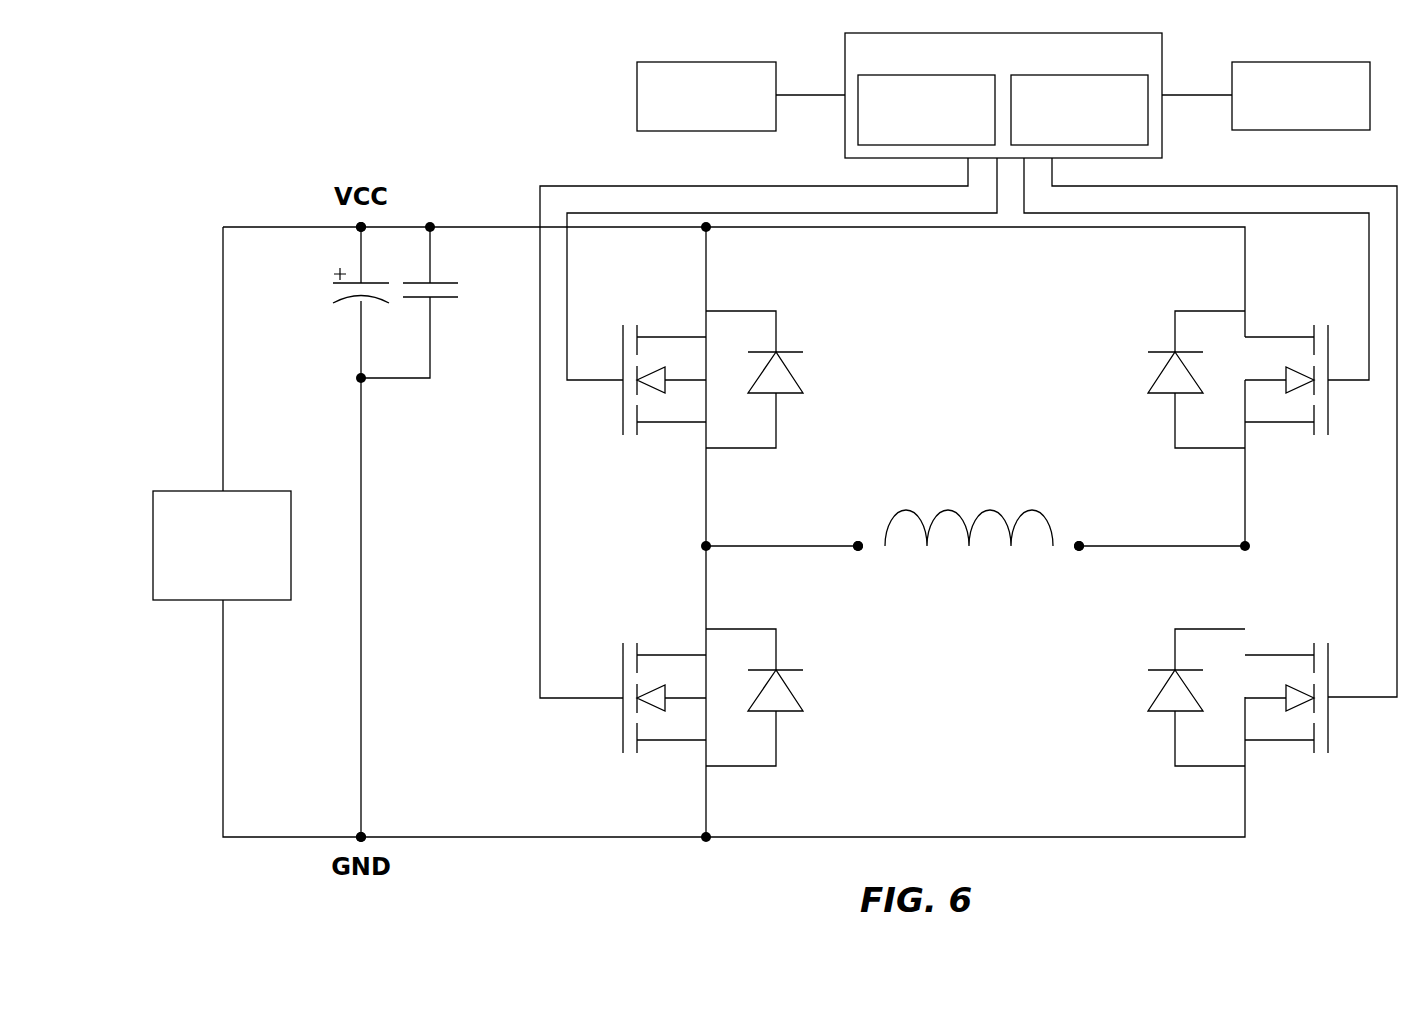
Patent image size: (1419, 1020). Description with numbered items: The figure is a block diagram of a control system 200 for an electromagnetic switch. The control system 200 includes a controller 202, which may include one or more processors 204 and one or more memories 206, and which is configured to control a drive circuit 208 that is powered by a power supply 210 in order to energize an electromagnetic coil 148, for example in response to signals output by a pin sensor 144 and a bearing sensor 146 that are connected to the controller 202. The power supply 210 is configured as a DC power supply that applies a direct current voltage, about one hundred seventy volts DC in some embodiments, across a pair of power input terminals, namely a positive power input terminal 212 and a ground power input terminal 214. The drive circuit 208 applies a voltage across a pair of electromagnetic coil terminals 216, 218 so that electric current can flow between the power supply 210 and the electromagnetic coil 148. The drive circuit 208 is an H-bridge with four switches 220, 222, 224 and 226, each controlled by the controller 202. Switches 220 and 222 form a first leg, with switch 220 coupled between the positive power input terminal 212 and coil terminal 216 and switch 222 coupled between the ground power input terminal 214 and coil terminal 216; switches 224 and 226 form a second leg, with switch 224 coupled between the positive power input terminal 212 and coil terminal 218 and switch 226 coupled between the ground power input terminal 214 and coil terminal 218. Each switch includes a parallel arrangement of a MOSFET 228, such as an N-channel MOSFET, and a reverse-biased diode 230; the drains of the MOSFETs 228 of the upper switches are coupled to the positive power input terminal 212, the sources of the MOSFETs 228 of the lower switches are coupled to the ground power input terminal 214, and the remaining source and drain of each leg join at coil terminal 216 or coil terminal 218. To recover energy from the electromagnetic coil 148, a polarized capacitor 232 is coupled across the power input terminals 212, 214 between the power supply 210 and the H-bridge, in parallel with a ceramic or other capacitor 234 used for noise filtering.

The pin sensor 144 is at (660, 62).
The bearing sensor 146 is at (1287, 62).
The electromagnetic coil 148 is at (995, 520).
The control system 200 is at (421, 82).
The controller 202 is at (885, 33).
The processor 204 is at (932, 75).
The memory 206 is at (1135, 75).
The drive circuit 208 is at (1195, 873).
The power supply 210 is at (188, 491).
The positive power input terminal 212 is at (343, 227).
The ground power input terminal 214 is at (358, 835).
The electromagnetic coil terminal 216 is at (857, 543).
The electromagnetic coil terminal 218 is at (1085, 540).
The switch 220 is at (822, 452).
The switch 222 is at (814, 744).
The switch 224 is at (1186, 467).
The switch 226 is at (1114, 731).
The MOSFET 228 is at (1300, 655).
The reverse-biased diode 230 is at (1163, 670).
The polarized capacitor 232 is at (360, 325).
The capacitor 234 is at (458, 283).